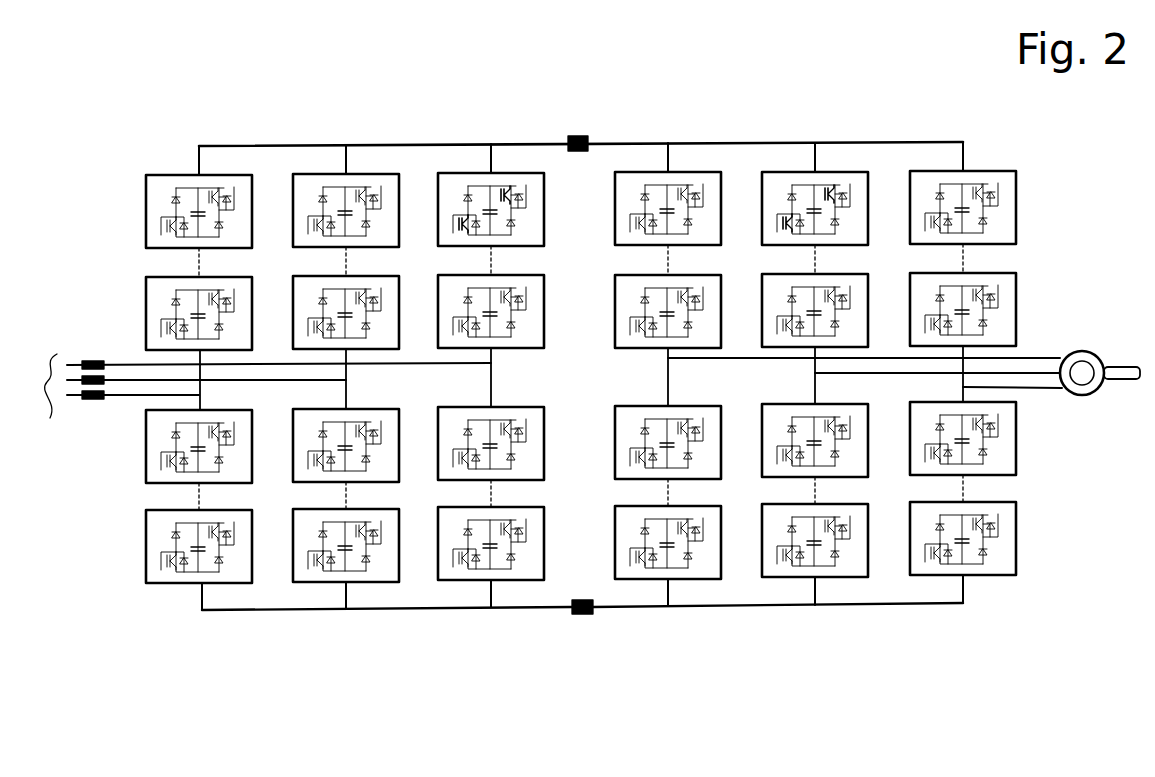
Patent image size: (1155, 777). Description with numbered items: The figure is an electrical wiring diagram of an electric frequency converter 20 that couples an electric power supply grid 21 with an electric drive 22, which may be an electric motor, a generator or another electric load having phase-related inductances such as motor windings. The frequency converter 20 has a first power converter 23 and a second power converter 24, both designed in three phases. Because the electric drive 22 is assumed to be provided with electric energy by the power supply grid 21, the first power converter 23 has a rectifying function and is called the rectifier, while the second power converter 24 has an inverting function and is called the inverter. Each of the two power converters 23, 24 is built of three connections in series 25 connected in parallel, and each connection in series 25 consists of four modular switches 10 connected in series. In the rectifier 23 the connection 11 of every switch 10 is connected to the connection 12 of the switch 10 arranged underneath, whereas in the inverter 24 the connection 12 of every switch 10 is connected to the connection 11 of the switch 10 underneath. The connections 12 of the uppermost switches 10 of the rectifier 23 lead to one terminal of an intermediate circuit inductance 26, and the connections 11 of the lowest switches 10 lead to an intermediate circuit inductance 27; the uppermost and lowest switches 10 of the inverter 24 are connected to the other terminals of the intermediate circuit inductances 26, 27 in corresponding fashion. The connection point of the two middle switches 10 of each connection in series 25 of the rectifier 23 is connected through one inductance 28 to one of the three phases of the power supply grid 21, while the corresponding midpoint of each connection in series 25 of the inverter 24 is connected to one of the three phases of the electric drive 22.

The modular switch 10 is at (152, 290).
The connection 11 is at (447, 222).
The connection 12 is at (532, 192).
The electric frequency converter 20 is at (1046, 663).
The electric power supply grid 21 is at (58, 416).
The electric drive 22 is at (1085, 352).
The first power converter 23 is at (532, 630).
The second power converter 24 is at (988, 630).
The connection in series 25 is at (300, 122).
The intermediate circuit inductance 26 is at (590, 138).
The intermediate circuit inductance 27 is at (585, 616).
The inductance 28 is at (100, 402).